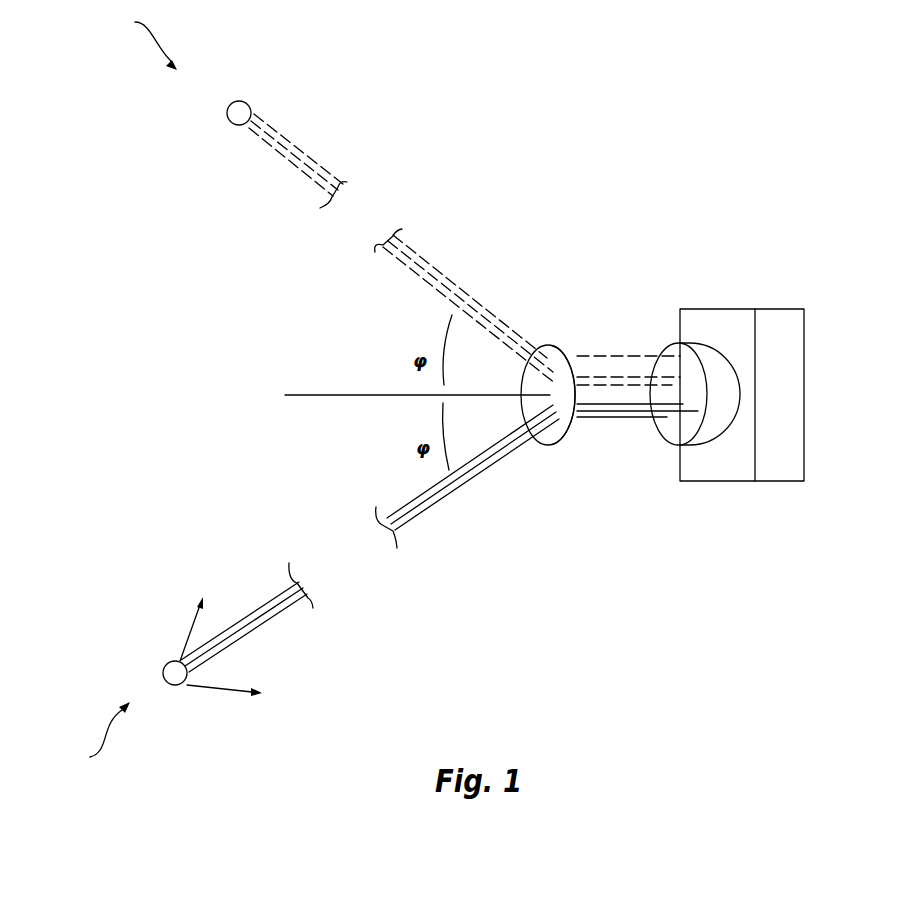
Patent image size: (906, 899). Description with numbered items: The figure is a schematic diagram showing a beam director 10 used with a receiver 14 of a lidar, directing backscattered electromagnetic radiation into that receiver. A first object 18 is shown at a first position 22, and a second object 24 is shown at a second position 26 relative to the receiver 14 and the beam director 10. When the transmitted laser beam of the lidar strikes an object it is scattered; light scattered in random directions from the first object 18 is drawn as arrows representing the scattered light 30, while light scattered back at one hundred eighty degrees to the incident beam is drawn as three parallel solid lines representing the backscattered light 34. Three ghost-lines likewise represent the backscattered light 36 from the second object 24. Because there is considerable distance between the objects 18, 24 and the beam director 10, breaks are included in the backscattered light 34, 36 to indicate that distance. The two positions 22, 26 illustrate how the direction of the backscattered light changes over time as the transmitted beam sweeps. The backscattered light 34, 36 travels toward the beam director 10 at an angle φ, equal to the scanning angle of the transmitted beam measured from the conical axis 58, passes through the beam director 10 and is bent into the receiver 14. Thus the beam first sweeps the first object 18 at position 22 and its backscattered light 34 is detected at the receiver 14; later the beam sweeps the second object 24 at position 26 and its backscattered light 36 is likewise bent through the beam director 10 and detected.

The beam director 10 is at (545, 347).
The receiver 14 is at (722, 323).
The first object 18 is at (175, 687).
The first position 22 is at (93, 736).
The second object 24 is at (242, 107).
The second position 26 is at (140, 41).
The scattered light 30 is at (190, 620).
The backscattered light 34 is at (447, 498).
The backscattered light 36 is at (442, 268).
The conical axis 58 is at (335, 396).